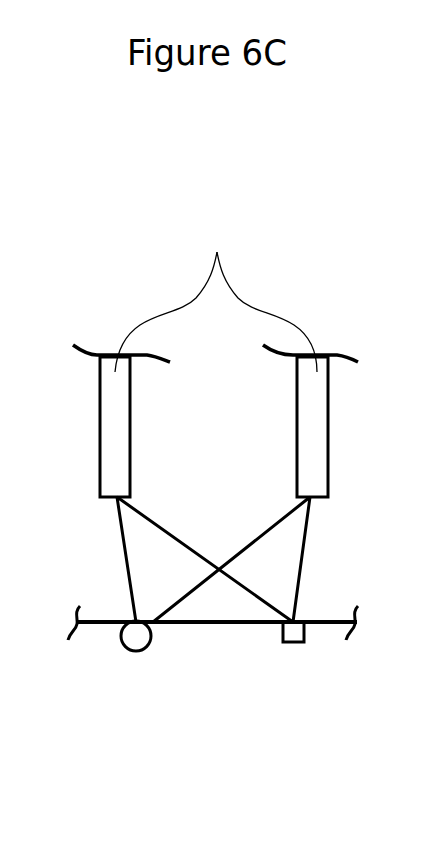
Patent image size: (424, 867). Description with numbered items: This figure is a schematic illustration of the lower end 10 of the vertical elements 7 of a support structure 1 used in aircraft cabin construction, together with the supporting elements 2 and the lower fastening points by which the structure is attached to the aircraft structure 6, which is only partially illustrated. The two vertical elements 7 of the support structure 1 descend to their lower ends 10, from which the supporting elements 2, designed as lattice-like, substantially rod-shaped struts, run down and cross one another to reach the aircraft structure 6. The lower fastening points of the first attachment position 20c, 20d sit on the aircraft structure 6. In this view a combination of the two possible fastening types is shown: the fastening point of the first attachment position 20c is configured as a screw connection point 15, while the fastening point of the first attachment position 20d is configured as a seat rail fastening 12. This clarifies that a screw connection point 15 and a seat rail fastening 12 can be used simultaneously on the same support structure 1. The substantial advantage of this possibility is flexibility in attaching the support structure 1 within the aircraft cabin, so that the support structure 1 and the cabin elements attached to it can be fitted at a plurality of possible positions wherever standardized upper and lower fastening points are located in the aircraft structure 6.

The support structure 1 is at (318, 318).
The supporting elements 2 is at (188, 513).
The aircraft structure 6 is at (170, 625).
The vertical elements 7 is at (216, 295).
The lower end 10 is at (95, 495).
The seat rail fastening 12 is at (293, 643).
The screw connection point 15 is at (135, 652).
The first attachment position 20c is at (135, 652).
The first attachment position 20d is at (293, 643).